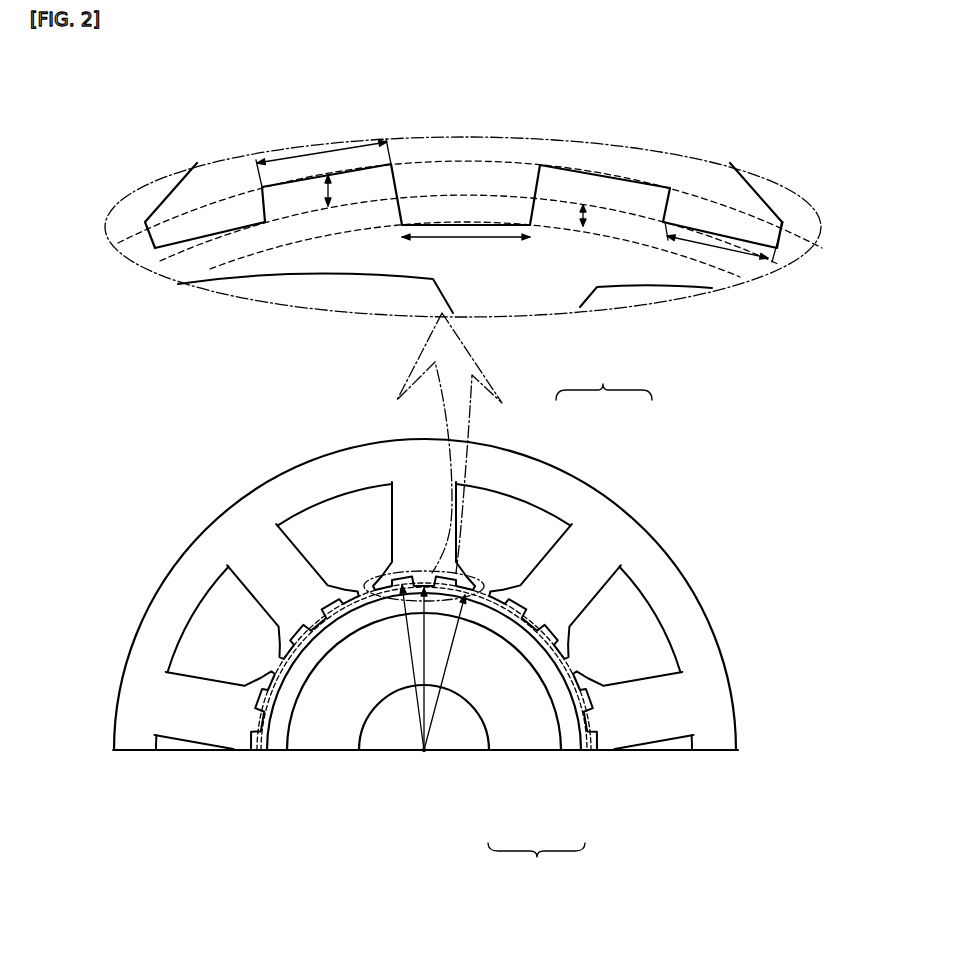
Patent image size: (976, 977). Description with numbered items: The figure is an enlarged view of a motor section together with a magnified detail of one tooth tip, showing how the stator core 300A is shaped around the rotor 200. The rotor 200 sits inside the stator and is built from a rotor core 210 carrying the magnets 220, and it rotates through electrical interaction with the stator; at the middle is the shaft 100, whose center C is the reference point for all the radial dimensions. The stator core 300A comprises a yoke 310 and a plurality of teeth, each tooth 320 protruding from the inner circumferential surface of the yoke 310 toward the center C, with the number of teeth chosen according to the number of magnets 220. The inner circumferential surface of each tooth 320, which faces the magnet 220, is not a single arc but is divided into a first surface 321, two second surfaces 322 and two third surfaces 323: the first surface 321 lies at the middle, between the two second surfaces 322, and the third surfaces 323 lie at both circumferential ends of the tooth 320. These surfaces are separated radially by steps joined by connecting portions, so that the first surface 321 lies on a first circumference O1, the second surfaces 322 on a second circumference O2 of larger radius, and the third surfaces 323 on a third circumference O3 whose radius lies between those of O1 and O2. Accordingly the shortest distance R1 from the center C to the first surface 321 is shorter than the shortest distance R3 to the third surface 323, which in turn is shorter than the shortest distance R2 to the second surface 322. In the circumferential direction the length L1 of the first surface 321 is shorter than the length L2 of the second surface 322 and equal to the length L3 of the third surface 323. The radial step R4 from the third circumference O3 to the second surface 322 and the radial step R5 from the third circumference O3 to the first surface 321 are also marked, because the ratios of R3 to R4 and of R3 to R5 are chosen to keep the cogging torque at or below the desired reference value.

The shaft 100 is at (398, 740).
The rotor 200 is at (429, 744).
The rotor core 210 is at (504, 736).
The magnets 220 is at (566, 736).
The stator core 300A is at (425, 560).
The yoke 310 is at (545, 487).
The tooth 320 is at (583, 585).
The first surface 321 is at (495, 238).
The second surface 322 is at (262, 187).
The third surface 323 is at (205, 246).
The center C is at (424, 752).
The length of the first surface L1 is at (470, 235).
The length of the second surface L2 is at (305, 155).
The length of the third surface L3 is at (705, 236).
The shortest distance to the first surface R1 is at (410, 625).
The shortest distance to the second surface R2 is at (424, 675).
The shortest distance to the third surface R3 is at (450, 655).
The shortest distance from the third surface to the second surface R4 is at (335, 190).
The shortest distance from the third surface to the first surface R5 is at (584, 216).
The first circumference O1 is at (333, 233).
The second circumference O2 is at (195, 208).
The third circumference O3 is at (133, 270).